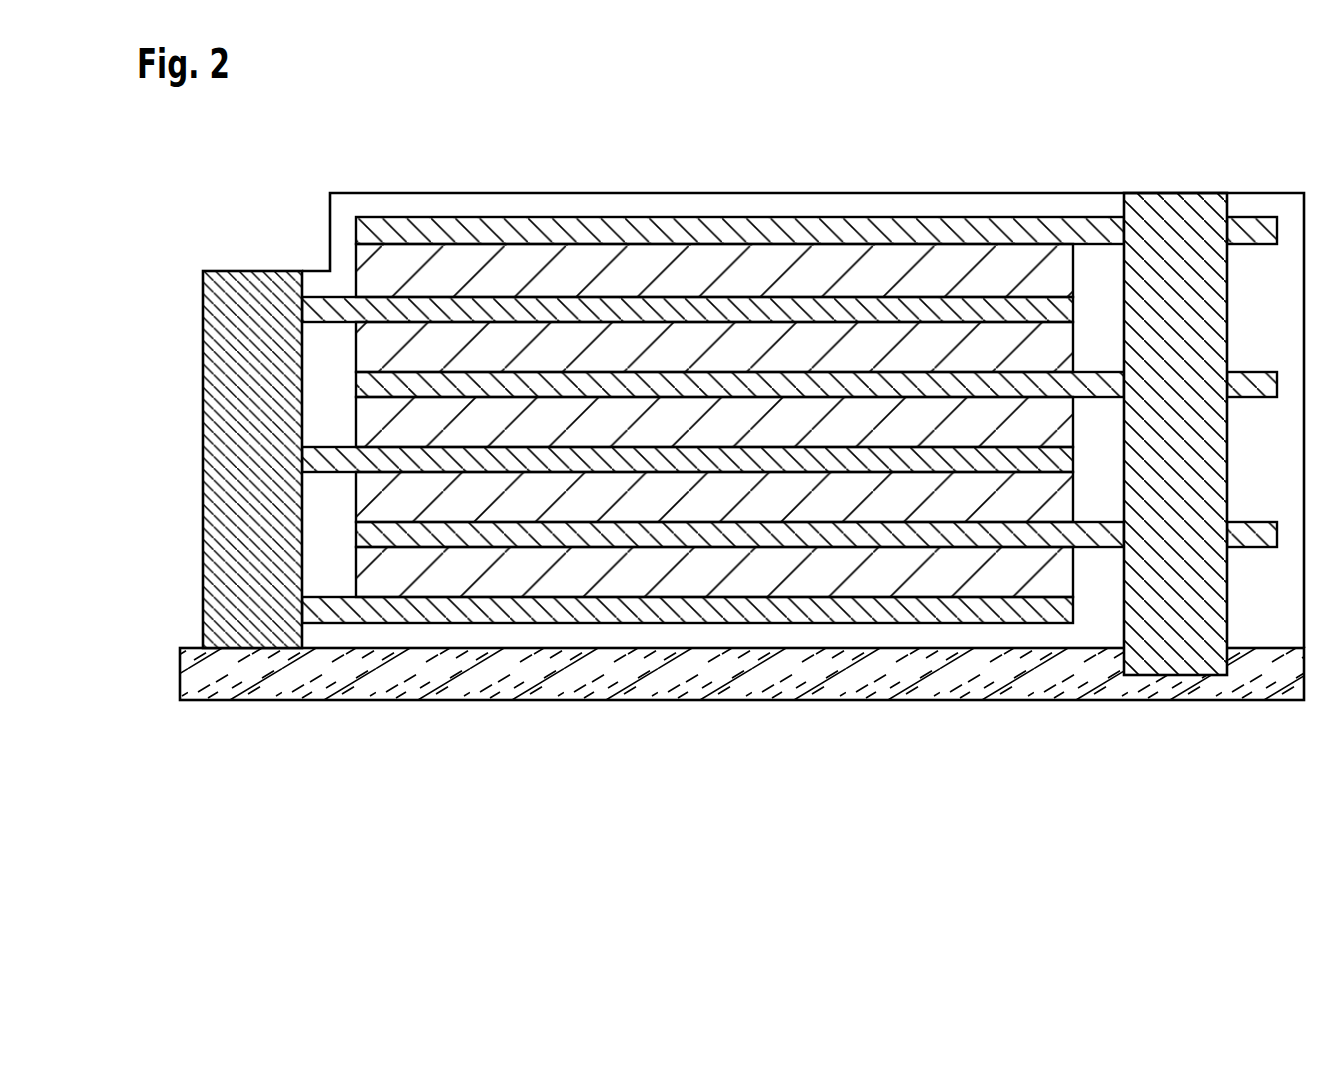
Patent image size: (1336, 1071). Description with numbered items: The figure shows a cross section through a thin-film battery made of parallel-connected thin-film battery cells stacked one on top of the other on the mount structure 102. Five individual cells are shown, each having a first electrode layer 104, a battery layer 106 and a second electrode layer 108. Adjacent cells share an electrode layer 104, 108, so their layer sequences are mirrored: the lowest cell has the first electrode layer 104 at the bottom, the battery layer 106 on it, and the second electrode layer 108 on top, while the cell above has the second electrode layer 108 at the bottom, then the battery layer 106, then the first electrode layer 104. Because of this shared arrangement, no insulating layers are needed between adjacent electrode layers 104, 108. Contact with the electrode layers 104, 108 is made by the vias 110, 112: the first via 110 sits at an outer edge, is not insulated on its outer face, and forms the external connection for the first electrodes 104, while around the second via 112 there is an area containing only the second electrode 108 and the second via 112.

The mount structure 102 is at (282, 685).
The first electrode layer 104 is at (500, 612).
The battery layer 106 is at (1057, 567).
The second electrode layer 108 is at (867, 536).
The first via 110 is at (247, 285).
The second via 112 is at (1171, 212).